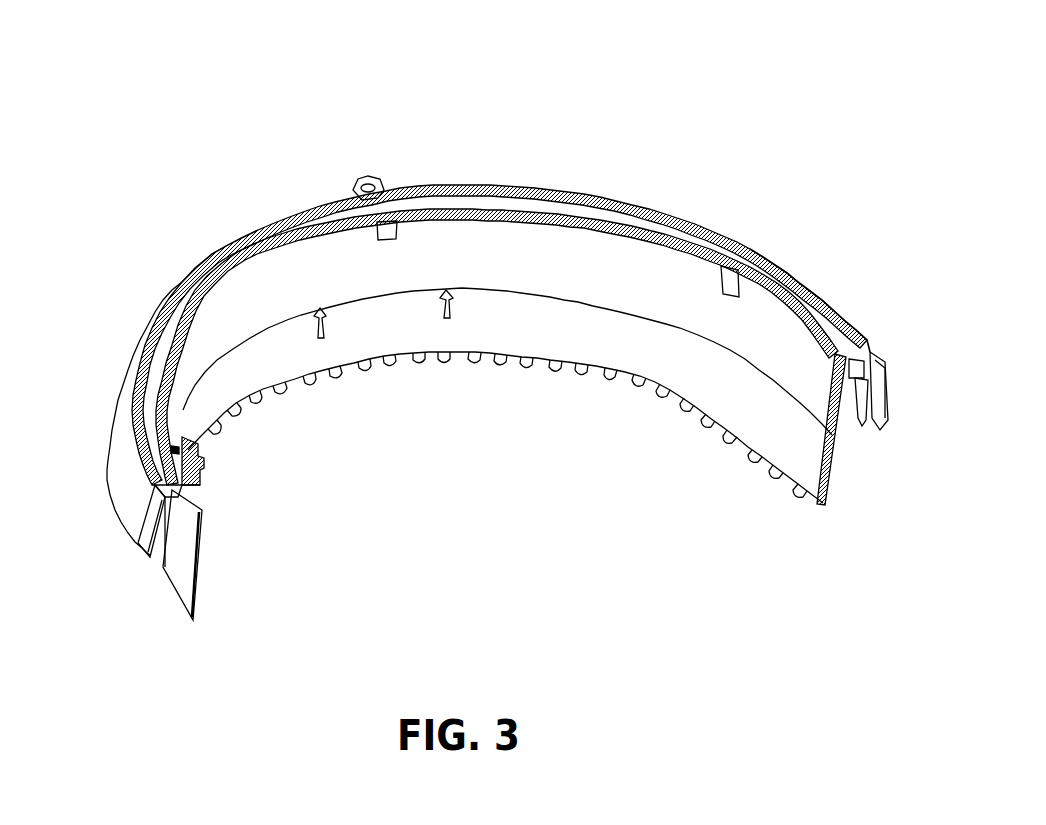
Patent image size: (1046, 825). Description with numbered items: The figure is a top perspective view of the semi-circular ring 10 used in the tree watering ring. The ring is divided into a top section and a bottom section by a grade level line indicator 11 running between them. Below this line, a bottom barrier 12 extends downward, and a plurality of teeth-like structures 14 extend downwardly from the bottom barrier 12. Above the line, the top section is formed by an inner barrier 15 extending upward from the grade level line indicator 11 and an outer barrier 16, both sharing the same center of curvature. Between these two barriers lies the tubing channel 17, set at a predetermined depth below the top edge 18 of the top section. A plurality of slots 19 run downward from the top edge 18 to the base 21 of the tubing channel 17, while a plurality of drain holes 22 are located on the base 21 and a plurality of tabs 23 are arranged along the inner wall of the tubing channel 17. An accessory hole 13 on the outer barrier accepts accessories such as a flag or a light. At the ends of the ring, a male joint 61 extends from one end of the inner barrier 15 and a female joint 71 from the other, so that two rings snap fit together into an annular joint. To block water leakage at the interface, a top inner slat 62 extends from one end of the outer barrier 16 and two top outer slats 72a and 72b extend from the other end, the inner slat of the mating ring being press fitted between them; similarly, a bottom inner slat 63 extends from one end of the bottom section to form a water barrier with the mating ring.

The semi-circular ring 10 is at (617, 163).
The grade level line indicator 11 is at (675, 329).
The bottom barrier 12 is at (772, 423).
The accessory hole 13 is at (371, 180).
The teeth-like structures 14 is at (643, 383).
The inner barrier 15 is at (808, 353).
The outer barrier 16 is at (128, 483).
The tubing channel 17 is at (786, 281).
The top edge 18 is at (838, 305).
The slots 19 is at (733, 268).
The base 21 is at (858, 380).
The drain holes 22 is at (170, 490).
The tabs 23 is at (186, 449).
The male joint 61 is at (843, 366).
The top inner slat 62 is at (142, 547).
The bottom inner slat 63 is at (200, 567).
The female joint 71 is at (204, 485).
The top outer slat 72a is at (870, 412).
The top outer slat 72b is at (887, 392).